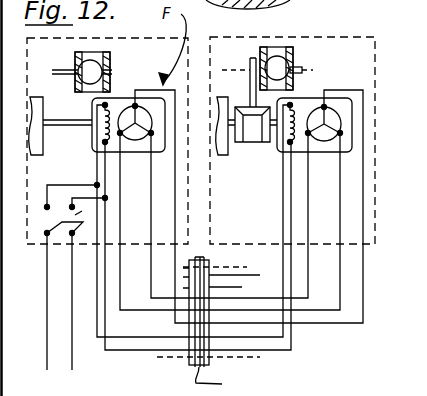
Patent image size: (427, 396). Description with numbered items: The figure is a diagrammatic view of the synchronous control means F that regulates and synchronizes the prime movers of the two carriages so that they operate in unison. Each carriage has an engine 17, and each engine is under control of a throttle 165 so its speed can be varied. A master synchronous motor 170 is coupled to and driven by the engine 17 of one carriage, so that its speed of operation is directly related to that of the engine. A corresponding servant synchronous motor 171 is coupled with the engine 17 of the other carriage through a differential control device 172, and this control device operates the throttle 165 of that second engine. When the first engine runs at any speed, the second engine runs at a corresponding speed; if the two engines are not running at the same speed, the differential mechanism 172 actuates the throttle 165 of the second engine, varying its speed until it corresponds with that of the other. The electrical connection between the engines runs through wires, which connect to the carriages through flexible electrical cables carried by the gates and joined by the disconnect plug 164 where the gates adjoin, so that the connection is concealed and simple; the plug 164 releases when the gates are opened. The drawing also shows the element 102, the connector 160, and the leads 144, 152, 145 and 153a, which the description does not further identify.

The engine 17 is at (40, 97).
The disc 102 is at (216, 9).
The throttle 165 is at (112, 72).
The master synchronous motor 170 is at (92, 150).
The servant synchronous motor 171 is at (330, 152).
The differential control device 172 is at (259, 142).
The connector 160 is at (233, 276).
The disconnect plug 164 is at (223, 380).
The conductor 144 is at (58, 314).
The conductor 152 is at (98, 314).
The conductor 145 is at (187, 332).
The conductor 153a is at (262, 335).